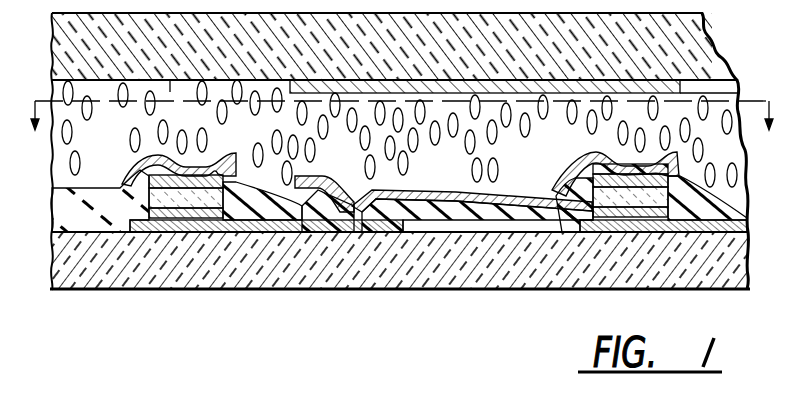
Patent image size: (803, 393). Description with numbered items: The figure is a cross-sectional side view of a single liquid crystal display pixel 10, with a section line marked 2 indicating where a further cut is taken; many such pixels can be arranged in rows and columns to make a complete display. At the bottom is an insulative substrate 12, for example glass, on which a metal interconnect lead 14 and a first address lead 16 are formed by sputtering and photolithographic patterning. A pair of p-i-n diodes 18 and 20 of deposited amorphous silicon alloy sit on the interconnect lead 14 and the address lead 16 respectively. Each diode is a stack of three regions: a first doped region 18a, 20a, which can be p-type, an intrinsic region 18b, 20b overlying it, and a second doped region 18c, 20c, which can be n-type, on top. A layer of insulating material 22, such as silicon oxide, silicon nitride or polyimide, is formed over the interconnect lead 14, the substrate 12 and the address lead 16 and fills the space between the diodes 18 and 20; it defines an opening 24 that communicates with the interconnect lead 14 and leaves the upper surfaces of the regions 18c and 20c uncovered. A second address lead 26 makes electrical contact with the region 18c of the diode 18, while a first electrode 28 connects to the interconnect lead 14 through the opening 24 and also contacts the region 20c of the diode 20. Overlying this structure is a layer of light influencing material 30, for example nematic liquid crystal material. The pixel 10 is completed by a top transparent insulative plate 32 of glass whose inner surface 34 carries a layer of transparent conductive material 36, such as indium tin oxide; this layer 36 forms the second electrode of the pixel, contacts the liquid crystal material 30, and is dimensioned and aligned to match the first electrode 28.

The display pixel 10 is at (732, 52).
The insulative substrate 12 is at (353, 287).
The interconnect lead 14 is at (240, 234).
The first address lead 16 is at (598, 234).
The diode 18 is at (205, 195).
The first doped region 18a is at (245, 212).
The intrinsic region 18b is at (136, 203).
The second doped region 18c is at (140, 166).
The diode 20 is at (678, 192).
The first doped region 20a is at (572, 197).
The intrinsic region 20b is at (572, 178).
The second doped region 20c is at (628, 168).
The insulating layer 22 is at (452, 226).
The opening 24 is at (356, 196).
The second address lead 26 is at (168, 154).
The first electrode 28 is at (462, 190).
The light influencing material 30 is at (119, 129).
The top transparent insulative plate 32 is at (151, 59).
The inner surface 34 is at (170, 96).
The transparent conductive layer 36 is at (498, 80).
The section line 2- 2 is at (400, 131).